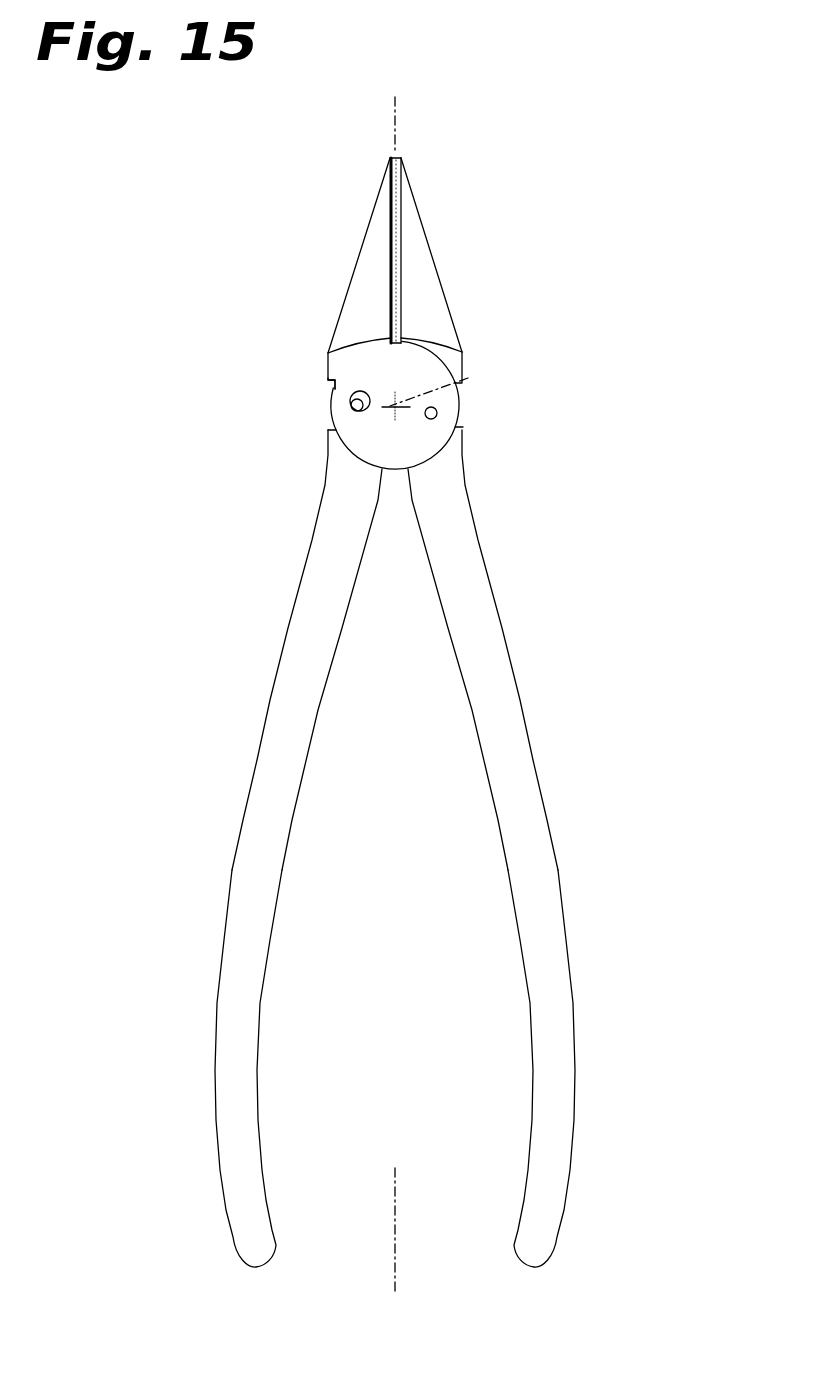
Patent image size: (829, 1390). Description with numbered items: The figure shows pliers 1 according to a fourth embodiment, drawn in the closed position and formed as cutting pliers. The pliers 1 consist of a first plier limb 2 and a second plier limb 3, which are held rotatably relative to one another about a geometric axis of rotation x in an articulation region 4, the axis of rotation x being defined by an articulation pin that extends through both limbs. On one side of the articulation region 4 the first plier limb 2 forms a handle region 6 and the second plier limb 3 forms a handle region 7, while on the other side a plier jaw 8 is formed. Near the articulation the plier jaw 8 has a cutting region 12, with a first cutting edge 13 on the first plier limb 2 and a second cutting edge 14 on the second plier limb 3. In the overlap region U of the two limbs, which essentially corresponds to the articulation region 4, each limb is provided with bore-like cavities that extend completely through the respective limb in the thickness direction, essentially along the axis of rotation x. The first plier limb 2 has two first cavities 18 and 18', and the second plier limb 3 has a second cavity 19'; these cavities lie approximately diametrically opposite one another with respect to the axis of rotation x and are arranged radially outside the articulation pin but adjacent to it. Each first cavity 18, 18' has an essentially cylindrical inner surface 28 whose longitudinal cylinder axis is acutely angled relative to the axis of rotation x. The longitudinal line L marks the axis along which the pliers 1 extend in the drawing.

The pliers 1 is at (555, 295).
The first plier limb 2 is at (543, 887).
The second plier limb 3 is at (252, 915).
The articulation region 4 is at (370, 378).
The handle region 6 is at (532, 787).
The handle region 7 is at (258, 817).
The plier jaw 8 is at (348, 245).
The cutting region 12 is at (410, 228).
The first cutting edge 13 is at (402, 252).
The second cutting edge 14 is at (390, 280).
The first cavity 18 is at (487, 436).
The first cavity 18' is at (295, 448).
The second cavity 19' is at (290, 372).
The cylindrical inner surface 28 is at (351, 407).
The overlap region U is at (383, 430).
The geometric axis of rotation x is at (468, 378).
The longitudinal axis L is at (397, 690).